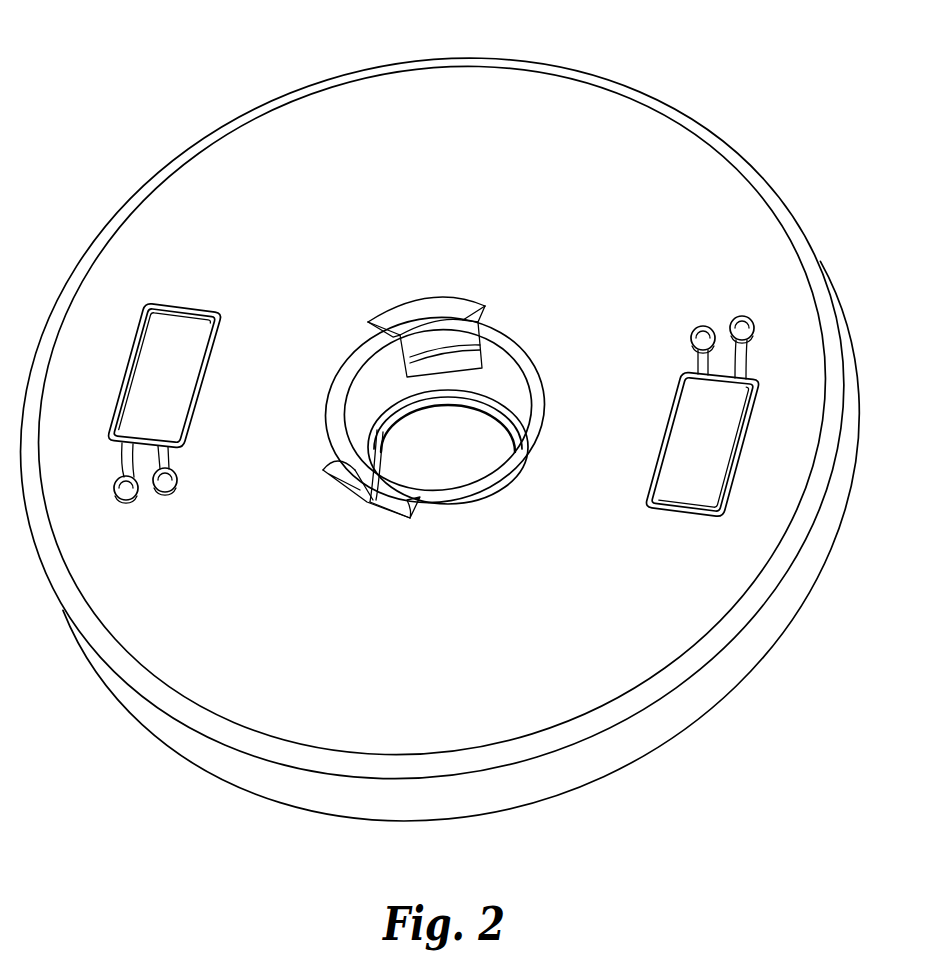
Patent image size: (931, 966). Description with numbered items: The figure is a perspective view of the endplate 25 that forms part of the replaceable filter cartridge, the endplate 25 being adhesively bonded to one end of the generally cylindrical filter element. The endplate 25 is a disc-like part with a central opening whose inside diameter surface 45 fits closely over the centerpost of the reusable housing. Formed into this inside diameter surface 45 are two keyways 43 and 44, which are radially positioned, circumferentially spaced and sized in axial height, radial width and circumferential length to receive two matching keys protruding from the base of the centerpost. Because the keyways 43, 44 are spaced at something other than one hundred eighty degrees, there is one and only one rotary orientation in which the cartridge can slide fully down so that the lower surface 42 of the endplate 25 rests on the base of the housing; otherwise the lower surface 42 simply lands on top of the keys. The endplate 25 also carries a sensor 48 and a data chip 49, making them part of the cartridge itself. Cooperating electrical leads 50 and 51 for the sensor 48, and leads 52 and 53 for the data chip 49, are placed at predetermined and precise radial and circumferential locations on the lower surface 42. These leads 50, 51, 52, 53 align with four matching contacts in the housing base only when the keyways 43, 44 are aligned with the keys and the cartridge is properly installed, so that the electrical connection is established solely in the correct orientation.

The endplate 25 is at (652, 165).
The lower surface 42 is at (254, 158).
The keyway 43 is at (365, 502).
The keyway 44 is at (436, 318).
The inside diameter surface 45 is at (500, 352).
The sensor 48 is at (168, 341).
The data chip 49 is at (701, 461).
The electrical lead 50 is at (160, 485).
The electrical lead 51 is at (116, 489).
The electrical lead 52 is at (703, 330).
The electrical lead 53 is at (742, 320).